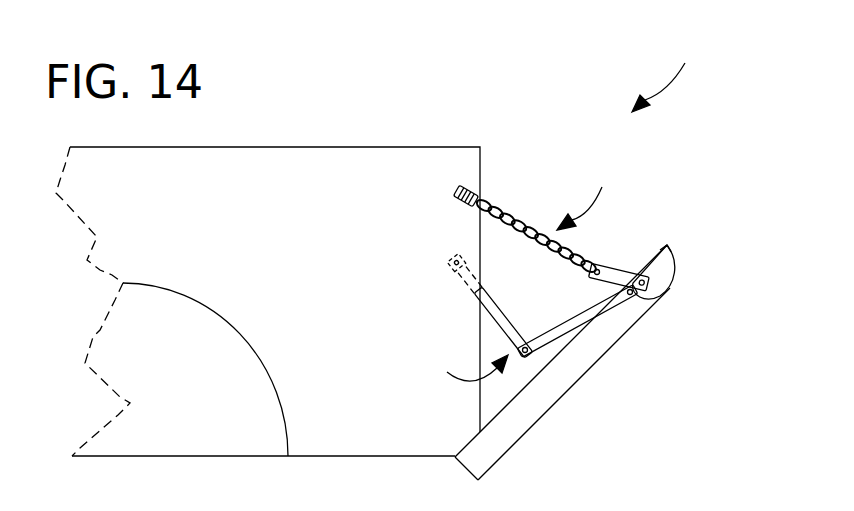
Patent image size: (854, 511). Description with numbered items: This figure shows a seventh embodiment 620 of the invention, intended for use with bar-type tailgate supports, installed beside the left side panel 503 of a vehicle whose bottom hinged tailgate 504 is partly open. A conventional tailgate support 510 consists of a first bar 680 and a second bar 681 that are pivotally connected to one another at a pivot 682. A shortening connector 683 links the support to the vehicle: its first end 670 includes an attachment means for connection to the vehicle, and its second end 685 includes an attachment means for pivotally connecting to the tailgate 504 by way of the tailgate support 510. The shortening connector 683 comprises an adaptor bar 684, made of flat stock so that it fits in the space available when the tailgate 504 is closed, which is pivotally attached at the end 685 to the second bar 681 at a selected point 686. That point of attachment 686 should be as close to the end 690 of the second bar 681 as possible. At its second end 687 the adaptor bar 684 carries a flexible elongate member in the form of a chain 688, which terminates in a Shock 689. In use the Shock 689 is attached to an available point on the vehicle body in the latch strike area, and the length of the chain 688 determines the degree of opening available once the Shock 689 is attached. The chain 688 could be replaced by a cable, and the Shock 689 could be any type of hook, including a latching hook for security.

The left side panel 503 is at (262, 147).
The tailgate 504 is at (535, 418).
The tailgate support 510 is at (455, 361).
The seventh embodiment 620 is at (675, 69).
The first end 670 is at (502, 182).
The first bar 680 is at (497, 325).
The second bar 681 is at (612, 308).
The pivot 682 is at (527, 357).
The shortening connector 683 is at (591, 194).
The adaptor bar 684 is at (646, 272).
The second end 685 is at (638, 298).
The selected point 686 is at (672, 278).
The second end of adaptor bar 687 is at (600, 266).
The chain 688 is at (522, 222).
The Shock 689 is at (455, 190).
The end of second bar 690 is at (667, 252).